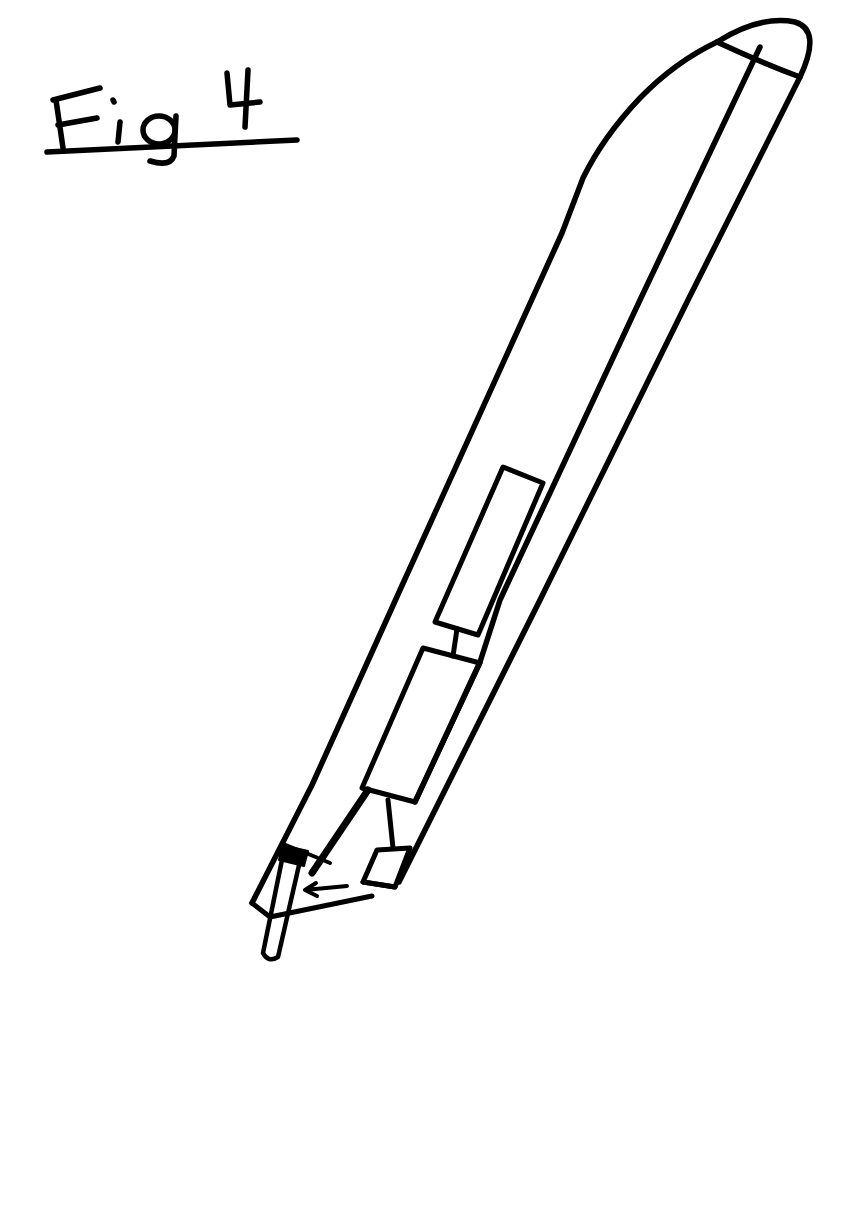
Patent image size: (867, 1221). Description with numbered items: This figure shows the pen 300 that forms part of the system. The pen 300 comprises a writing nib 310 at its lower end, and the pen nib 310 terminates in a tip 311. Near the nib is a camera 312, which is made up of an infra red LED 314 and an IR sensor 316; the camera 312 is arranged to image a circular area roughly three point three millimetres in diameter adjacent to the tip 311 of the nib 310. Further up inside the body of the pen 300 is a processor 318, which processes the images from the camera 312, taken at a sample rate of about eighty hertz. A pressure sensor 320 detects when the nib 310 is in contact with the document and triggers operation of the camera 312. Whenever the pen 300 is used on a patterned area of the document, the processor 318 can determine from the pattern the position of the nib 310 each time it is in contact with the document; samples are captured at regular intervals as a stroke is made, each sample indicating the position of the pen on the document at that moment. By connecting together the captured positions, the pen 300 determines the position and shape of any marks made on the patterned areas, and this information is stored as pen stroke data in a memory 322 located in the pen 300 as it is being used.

The pen 300 is at (507, 347).
The writing nib 310 is at (263, 926).
The tip 311 is at (263, 957).
The camera 312 is at (423, 888).
The infra red (IR) LED 314 is at (383, 880).
The IR sensor 316 is at (327, 910).
The processor 318 is at (430, 727).
The pressure sensor 320 is at (287, 840).
The memory 322 is at (473, 533).